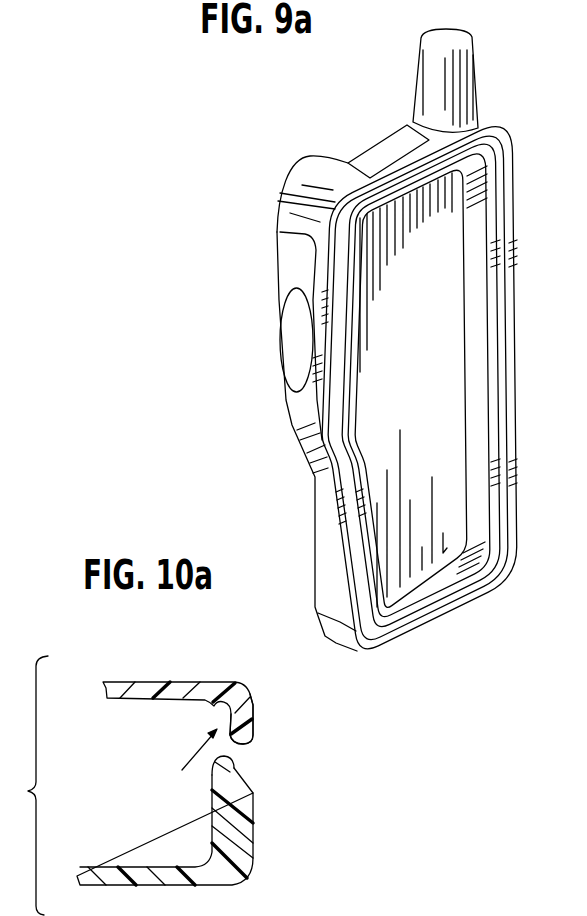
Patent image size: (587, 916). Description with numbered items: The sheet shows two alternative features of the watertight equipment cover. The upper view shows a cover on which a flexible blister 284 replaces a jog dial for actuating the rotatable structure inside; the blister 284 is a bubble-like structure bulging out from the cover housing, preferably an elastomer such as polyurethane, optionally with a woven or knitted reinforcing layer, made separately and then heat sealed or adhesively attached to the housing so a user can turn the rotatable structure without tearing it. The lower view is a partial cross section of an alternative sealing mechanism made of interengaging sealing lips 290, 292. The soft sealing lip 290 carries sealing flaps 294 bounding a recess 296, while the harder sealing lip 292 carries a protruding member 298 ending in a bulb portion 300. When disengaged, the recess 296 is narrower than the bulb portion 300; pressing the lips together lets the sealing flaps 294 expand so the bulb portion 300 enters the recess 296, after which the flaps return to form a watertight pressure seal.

In FIG. 9A, the flexible blister 284 is at (297, 362).
In FIG. 10A, the sealing lip 290 is at (180, 682).
In FIG. 10A, the sealing lip 292 is at (253, 848).
In FIG. 10A, the sealing flaps 294 is at (207, 712).
In FIG. 10A, the recess 296 is at (182, 770).
In FIG. 10A, the protruding member 298 is at (232, 778).
In FIG. 10A, the bulb portion 300 is at (240, 760).